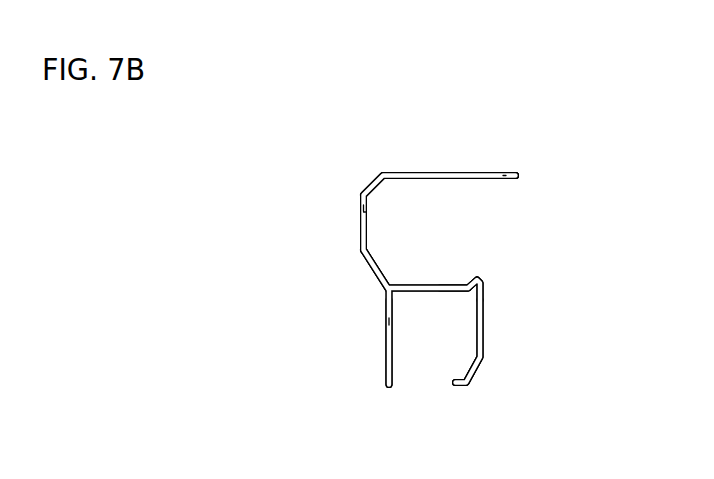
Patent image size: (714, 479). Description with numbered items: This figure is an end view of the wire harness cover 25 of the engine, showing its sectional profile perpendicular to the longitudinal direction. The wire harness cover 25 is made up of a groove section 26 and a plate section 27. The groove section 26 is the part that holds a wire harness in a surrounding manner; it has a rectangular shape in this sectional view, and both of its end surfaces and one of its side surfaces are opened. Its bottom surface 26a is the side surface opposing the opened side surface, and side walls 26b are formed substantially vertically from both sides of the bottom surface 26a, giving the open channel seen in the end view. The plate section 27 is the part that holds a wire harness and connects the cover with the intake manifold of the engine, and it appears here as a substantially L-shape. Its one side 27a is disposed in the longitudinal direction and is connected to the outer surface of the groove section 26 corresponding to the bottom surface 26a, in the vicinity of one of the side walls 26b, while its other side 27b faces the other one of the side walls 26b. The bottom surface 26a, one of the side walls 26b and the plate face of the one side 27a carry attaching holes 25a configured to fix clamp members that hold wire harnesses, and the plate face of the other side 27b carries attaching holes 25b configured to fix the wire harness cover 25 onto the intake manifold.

The wire harness cover 25 is at (260, 113).
The attaching holes 25a is at (360, 216).
The attaching holes 25b is at (506, 176).
The groove section 26 is at (427, 423).
The bottom surface 26a is at (412, 294).
The side walls 26b is at (383, 372).
The plate section 27 is at (283, 224).
The one side 27a is at (362, 279).
The other side 27b is at (440, 173).